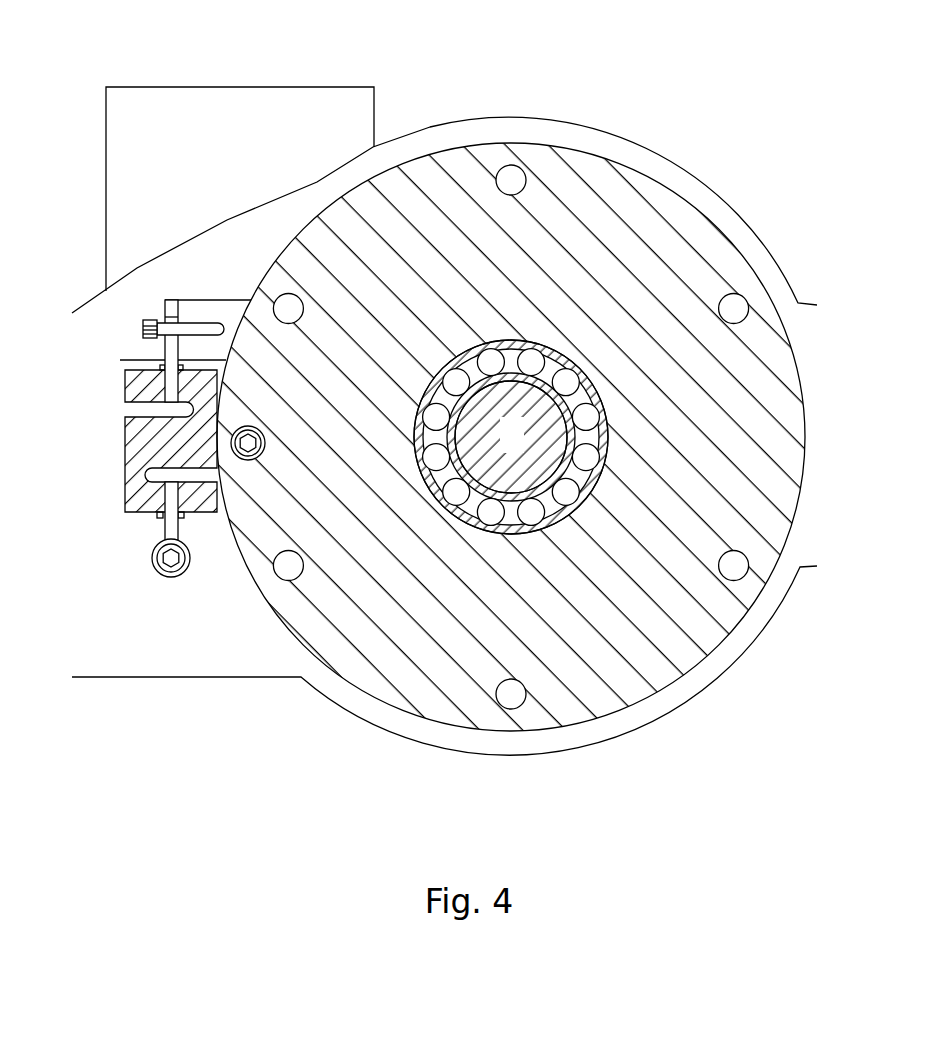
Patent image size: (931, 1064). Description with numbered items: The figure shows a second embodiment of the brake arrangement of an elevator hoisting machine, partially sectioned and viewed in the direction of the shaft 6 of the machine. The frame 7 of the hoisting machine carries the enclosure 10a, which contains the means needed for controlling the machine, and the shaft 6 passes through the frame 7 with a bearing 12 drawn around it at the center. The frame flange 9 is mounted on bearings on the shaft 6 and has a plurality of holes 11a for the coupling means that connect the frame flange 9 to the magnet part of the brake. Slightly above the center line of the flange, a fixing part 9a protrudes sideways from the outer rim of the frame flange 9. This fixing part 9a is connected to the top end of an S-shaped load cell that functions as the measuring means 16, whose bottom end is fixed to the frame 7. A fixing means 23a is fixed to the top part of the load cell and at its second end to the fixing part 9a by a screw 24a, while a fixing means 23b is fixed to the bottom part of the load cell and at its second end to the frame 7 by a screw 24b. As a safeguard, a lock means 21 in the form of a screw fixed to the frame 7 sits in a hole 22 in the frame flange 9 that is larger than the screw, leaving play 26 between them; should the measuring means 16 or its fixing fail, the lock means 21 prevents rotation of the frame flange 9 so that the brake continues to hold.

The shaft 6 is at (503, 452).
The frame 7 is at (508, 117).
The frame flange 9 is at (648, 182).
The fixing part 9a is at (188, 300).
The enclosure 10a is at (238, 93).
The holes 11a is at (735, 572).
The bearing 12 is at (548, 503).
The measuring means 16 is at (130, 457).
The lock means 21 is at (252, 432).
The hole 22 is at (250, 460).
The fixing means 23a is at (122, 360).
The fixing means 23b is at (168, 528).
The screw 24a is at (150, 338).
The screw 24b is at (168, 560).
The play 26 is at (265, 443).